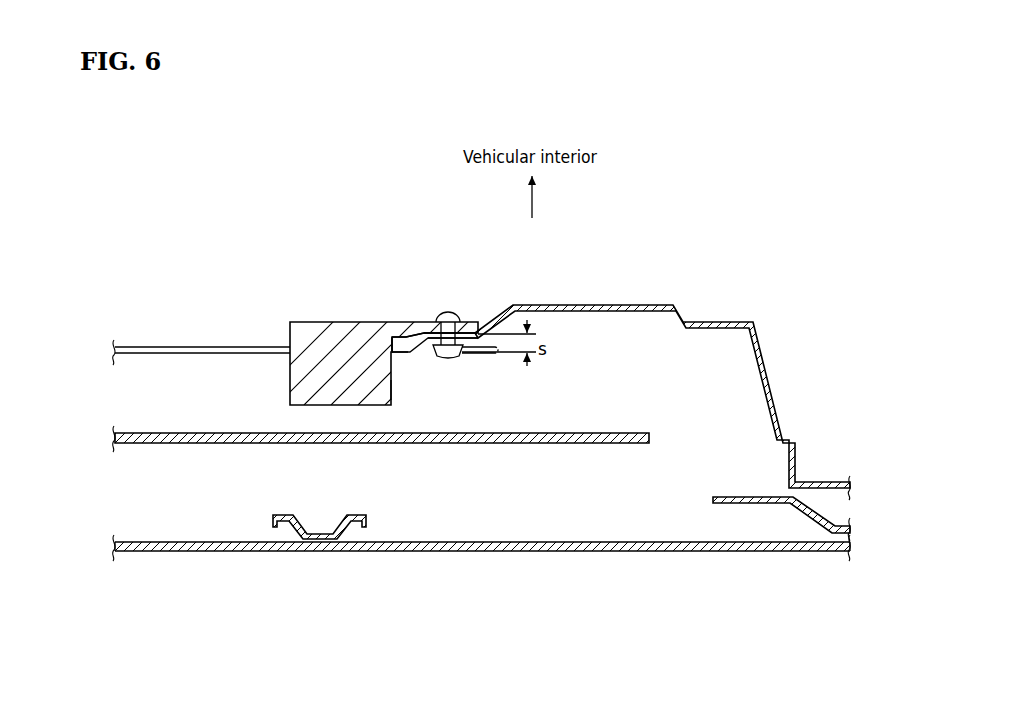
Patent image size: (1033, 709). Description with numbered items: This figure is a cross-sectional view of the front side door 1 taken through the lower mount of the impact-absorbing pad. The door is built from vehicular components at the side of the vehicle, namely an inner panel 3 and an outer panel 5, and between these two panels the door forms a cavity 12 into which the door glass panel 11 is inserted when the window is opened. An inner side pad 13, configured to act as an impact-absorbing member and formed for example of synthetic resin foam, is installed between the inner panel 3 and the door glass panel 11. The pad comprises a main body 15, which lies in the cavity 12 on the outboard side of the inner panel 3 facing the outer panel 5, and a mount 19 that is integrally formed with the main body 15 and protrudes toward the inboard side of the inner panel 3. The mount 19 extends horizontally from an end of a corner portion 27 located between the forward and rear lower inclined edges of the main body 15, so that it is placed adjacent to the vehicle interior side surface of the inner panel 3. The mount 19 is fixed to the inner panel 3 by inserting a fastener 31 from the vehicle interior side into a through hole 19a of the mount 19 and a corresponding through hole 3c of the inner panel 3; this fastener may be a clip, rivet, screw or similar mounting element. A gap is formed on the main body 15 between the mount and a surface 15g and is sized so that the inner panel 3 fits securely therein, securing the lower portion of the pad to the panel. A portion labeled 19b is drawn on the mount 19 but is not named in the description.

The front side door 1 is at (755, 555).
The inner panel 3 is at (728, 322).
The through hole 3c is at (447, 359).
The outer panel 5 is at (200, 553).
The door glass panel 11 is at (165, 445).
The cavity 12 is at (730, 466).
The inner side pad 13 is at (296, 316).
The main body 15 is at (289, 372).
The surface 15g is at (492, 357).
The mount 19 is at (419, 334).
The through hole 19a is at (452, 321).
The bracket bent portion 19b is at (386, 349).
The corner portion 27 is at (392, 388).
The fastener 31 is at (447, 312).